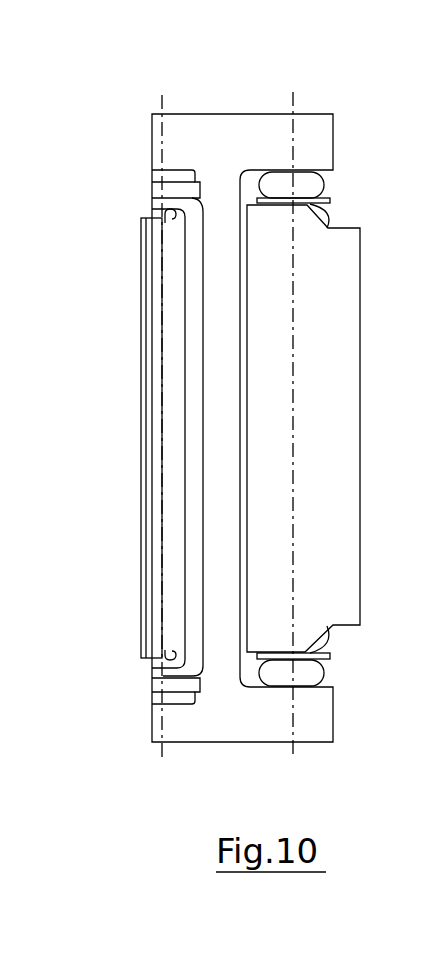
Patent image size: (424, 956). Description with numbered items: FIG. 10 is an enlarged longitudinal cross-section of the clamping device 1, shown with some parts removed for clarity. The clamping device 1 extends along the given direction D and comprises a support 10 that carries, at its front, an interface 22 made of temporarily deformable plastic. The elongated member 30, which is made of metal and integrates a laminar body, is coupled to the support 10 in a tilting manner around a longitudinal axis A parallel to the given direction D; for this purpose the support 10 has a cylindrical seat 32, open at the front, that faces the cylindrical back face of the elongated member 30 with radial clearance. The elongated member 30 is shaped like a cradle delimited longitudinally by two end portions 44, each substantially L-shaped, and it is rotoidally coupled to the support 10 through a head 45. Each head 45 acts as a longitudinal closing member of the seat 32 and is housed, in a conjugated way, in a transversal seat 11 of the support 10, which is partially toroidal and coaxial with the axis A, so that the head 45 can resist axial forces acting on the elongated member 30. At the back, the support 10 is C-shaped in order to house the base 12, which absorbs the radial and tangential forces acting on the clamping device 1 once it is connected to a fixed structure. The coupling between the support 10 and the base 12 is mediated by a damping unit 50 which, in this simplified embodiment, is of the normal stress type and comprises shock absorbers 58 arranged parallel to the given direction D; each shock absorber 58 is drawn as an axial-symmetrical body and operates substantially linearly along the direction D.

The clamping device 1 is at (78, 422).
The support 10 is at (322, 143).
The transversal seat 11 is at (177, 726).
The base 12 is at (347, 424).
The interface 22 is at (93, 438).
The elongated member 30 is at (205, 232).
The cylindrical seat 32 is at (154, 329).
The end portion 44 is at (152, 208).
The head 45 is at (152, 176).
The damping unit 50 is at (330, 200).
The shock absorber 58 is at (276, 178).
The longitudinal axis A is at (160, 758).
The given direction D is at (296, 90).